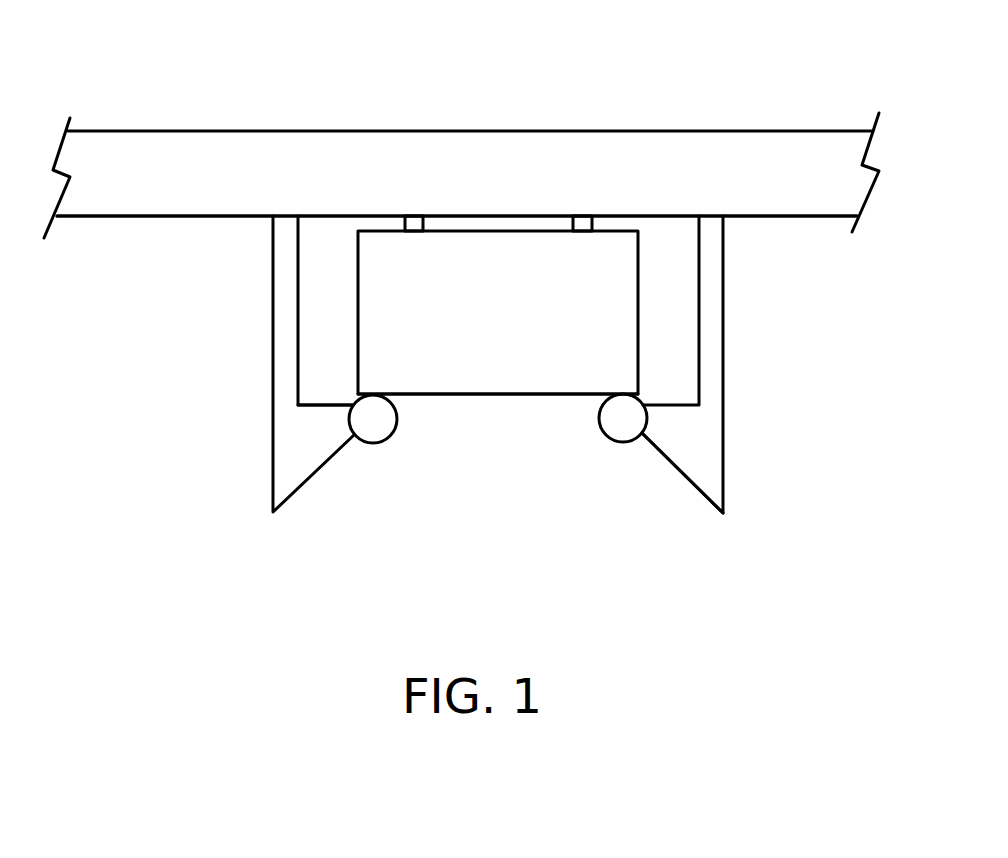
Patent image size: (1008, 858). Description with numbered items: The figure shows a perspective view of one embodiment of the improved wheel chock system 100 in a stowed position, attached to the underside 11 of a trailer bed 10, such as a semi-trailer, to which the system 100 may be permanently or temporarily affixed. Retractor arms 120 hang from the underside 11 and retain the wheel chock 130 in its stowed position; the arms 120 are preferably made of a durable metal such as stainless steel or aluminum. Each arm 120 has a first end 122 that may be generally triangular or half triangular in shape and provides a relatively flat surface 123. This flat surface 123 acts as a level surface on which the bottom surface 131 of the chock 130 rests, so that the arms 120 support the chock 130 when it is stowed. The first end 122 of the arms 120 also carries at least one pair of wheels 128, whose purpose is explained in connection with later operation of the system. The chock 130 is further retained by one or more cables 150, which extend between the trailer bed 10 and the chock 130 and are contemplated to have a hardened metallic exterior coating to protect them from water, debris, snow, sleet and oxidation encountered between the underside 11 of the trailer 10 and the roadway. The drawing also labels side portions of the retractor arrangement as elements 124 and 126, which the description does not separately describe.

The trailer bed 10 is at (496, 177).
The underside 11 is at (209, 217).
The wheel chock system 100 is at (506, 324).
The retractor arms 120 is at (506, 406).
The first end 122 is at (683, 477).
The flat surface 123 is at (331, 403).
The left side wall of bracket 124 is at (287, 358).
The right side wall of bracket 126 is at (726, 236).
The wheels 128 is at (613, 412).
The wheel chock 130 is at (520, 333).
The bottom surface 131 is at (453, 394).
The cables 150 is at (412, 223).